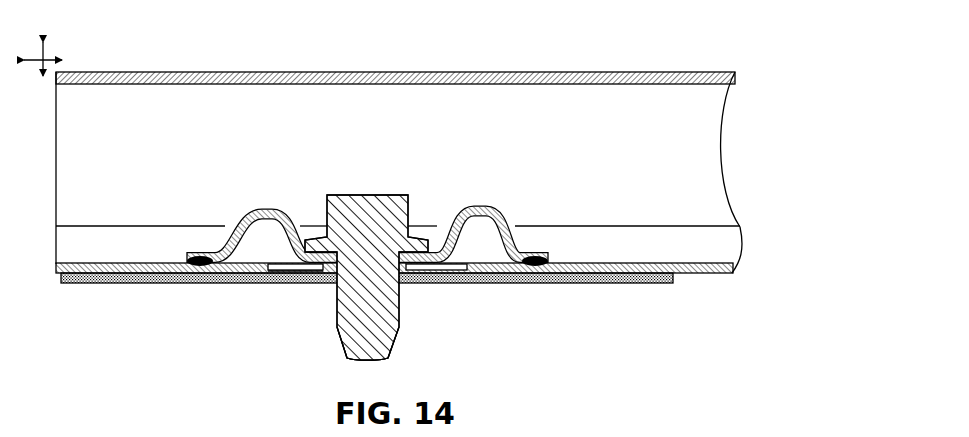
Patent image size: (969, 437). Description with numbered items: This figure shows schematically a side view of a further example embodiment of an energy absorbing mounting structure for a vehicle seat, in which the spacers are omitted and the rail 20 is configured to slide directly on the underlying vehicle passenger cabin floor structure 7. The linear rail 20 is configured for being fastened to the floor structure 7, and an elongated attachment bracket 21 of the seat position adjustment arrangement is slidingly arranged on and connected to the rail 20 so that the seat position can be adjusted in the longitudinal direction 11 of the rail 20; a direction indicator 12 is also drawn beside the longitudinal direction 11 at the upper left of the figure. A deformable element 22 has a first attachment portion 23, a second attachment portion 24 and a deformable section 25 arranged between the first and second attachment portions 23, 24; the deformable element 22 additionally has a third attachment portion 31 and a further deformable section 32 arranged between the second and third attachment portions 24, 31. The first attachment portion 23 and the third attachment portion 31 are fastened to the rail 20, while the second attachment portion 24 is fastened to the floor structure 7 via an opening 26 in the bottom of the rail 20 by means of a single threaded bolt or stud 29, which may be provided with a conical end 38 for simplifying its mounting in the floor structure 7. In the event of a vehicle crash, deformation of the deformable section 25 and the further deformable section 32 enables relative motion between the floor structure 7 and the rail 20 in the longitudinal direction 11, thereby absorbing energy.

The vehicle passenger cabin floor structure 7 is at (75, 283).
The longitudinal direction 11 is at (55, 51).
The second direction 12 is at (47, 48).
The rail 20 is at (516, 266).
The attachment bracket 21 is at (633, 72).
The deformable element 22 is at (288, 204).
The first attachment portion 23 is at (217, 284).
The second attachment portion 24 is at (418, 285).
The deformable section 25 is at (251, 206).
The opening 26 is at (280, 283).
The threaded bolt or stud 29 is at (357, 195).
The third attachment portion 31 is at (557, 230).
The further deformable section 32 is at (485, 205).
The conical end 38 is at (343, 333).